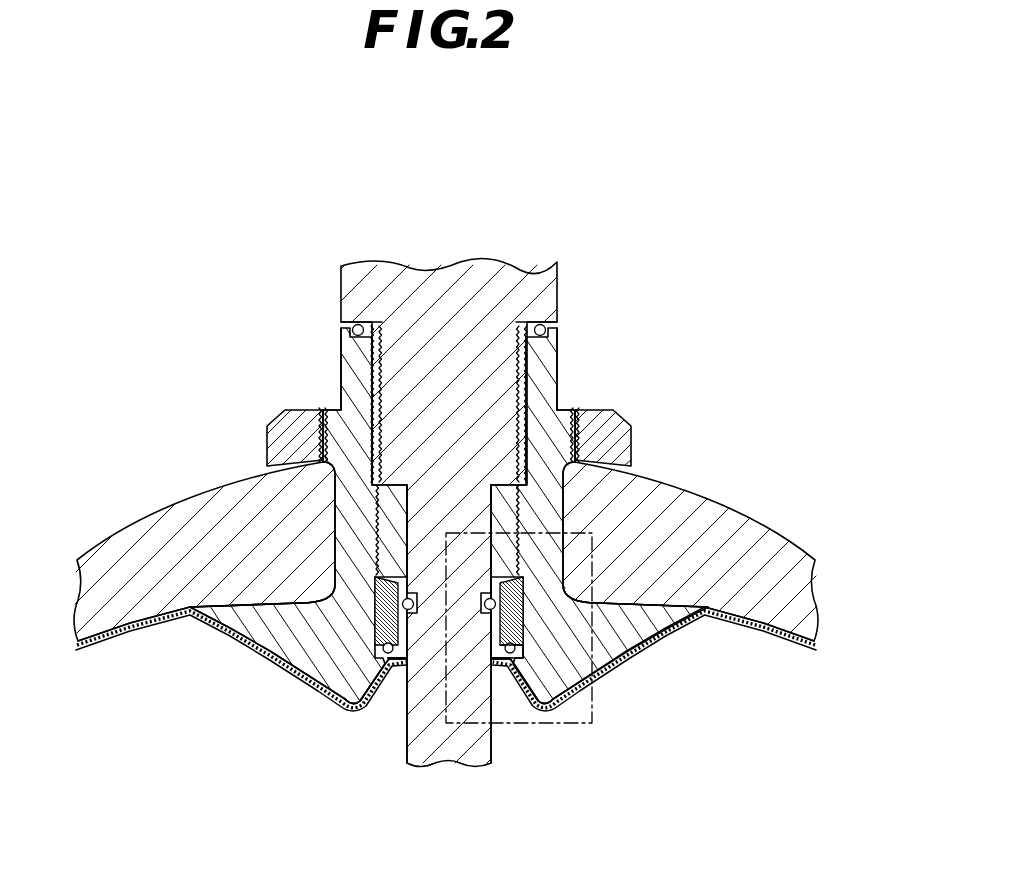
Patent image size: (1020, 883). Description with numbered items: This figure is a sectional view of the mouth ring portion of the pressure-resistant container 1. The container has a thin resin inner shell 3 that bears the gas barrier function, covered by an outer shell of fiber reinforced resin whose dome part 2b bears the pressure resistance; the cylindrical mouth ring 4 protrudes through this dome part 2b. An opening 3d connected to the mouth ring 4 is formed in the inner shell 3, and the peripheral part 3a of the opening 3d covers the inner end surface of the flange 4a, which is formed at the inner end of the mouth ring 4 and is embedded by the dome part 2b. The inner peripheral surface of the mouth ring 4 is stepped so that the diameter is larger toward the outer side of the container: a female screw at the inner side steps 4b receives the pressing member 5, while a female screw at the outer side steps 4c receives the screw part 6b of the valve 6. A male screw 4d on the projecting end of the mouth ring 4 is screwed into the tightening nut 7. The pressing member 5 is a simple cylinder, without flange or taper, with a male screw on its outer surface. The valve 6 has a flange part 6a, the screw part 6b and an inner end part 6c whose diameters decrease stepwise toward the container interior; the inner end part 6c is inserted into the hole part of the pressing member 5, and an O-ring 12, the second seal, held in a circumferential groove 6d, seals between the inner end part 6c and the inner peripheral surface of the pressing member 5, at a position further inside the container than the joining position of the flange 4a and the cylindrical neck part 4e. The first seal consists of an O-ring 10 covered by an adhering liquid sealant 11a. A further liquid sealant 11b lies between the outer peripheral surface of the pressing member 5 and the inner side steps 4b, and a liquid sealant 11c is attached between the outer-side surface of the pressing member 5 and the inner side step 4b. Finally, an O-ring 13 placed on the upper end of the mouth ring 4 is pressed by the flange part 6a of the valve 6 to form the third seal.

The pressure-resistant container 1 is at (542, 208).
The dome part 2b is at (131, 538).
The inner shell 3 is at (116, 631).
The peripheral part 3a is at (277, 670).
The opening 3d is at (447, 760).
The mouth ring 4 is at (558, 363).
The flange 4a is at (252, 628).
The inner side steps 4b is at (377, 527).
The outer side steps 4c is at (367, 405).
The male screw 4d is at (568, 415).
The cylindrical neck part 4e is at (627, 457).
The pressing member 5 is at (372, 637).
The valve 6 is at (557, 288).
The flange part 6a is at (352, 298).
The screw part 6b is at (393, 373).
The inner end part 6c is at (404, 740).
The circumferential groove 6d is at (422, 612).
The tightening nut 7 is at (627, 420).
The O-ring 10 is at (488, 660).
The liquid sealant 11a is at (498, 662).
The liquid sealant 11b is at (510, 663).
The liquid sealant 11c is at (512, 588).
The O-ring 12 is at (517, 594).
The O-ring 13 is at (557, 320).